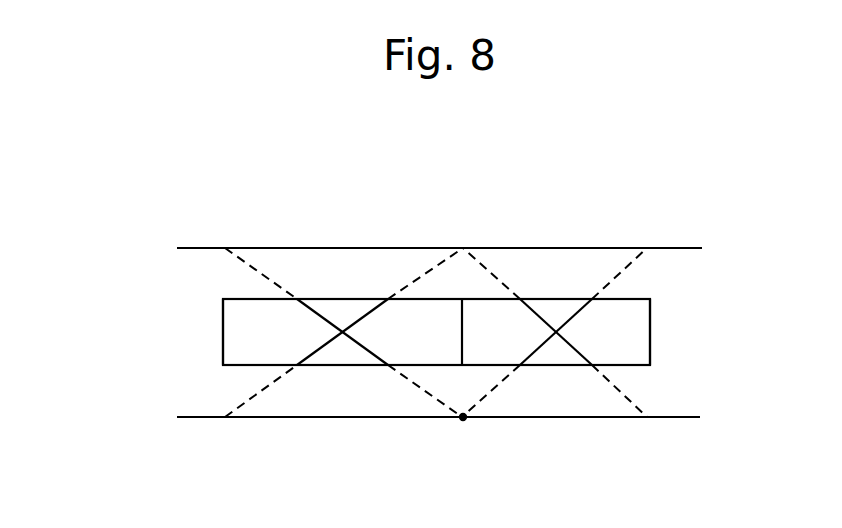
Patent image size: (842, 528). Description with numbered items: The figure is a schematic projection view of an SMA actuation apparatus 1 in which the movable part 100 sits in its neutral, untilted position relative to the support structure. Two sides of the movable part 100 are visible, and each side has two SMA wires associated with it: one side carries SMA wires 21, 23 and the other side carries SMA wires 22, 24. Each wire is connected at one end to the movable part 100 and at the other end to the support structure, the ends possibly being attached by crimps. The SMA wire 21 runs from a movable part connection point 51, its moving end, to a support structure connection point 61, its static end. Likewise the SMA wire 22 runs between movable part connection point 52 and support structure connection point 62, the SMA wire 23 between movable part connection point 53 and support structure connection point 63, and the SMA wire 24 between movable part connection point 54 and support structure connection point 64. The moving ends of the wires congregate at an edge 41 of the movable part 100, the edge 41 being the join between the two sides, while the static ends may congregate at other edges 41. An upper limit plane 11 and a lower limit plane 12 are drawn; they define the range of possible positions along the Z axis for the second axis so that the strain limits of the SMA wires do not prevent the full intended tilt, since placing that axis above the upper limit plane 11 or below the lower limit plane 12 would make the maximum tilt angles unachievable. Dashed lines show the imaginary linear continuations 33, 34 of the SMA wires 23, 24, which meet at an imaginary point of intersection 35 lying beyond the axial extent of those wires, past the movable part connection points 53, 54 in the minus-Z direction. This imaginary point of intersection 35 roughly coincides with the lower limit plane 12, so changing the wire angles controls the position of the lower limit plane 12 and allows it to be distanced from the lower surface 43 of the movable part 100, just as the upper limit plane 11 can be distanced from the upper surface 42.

The actuation apparatus 1 is at (112, 205).
The upper limit plane 11 is at (668, 248).
The lower limit plane 12 is at (683, 417).
The movable part 100 is at (628, 313).
The edge 41 is at (223, 350).
The upper surface 42 is at (626, 298).
The lower surface 43 is at (575, 365).
The SMA wire 21 is at (352, 297).
The SMA wire 22 is at (547, 302).
The SMA wire 23 is at (307, 313).
The SMA wire 24 is at (541, 350).
The imaginary linear continuation 33 is at (433, 397).
The imaginary linear continuation 34 is at (490, 393).
The imaginary point of intersection 35 is at (463, 420).
The movable part connection point 51 is at (388, 299).
The movable part connection point 52 is at (520, 299).
The movable part connection point 53 is at (388, 365).
The movable part connection point 54 is at (518, 360).
The support structure connection point 61 is at (297, 365).
The support structure connection point 62 is at (592, 365).
The support structure connection point 63 is at (297, 299).
The support structure connection point 64 is at (592, 299).